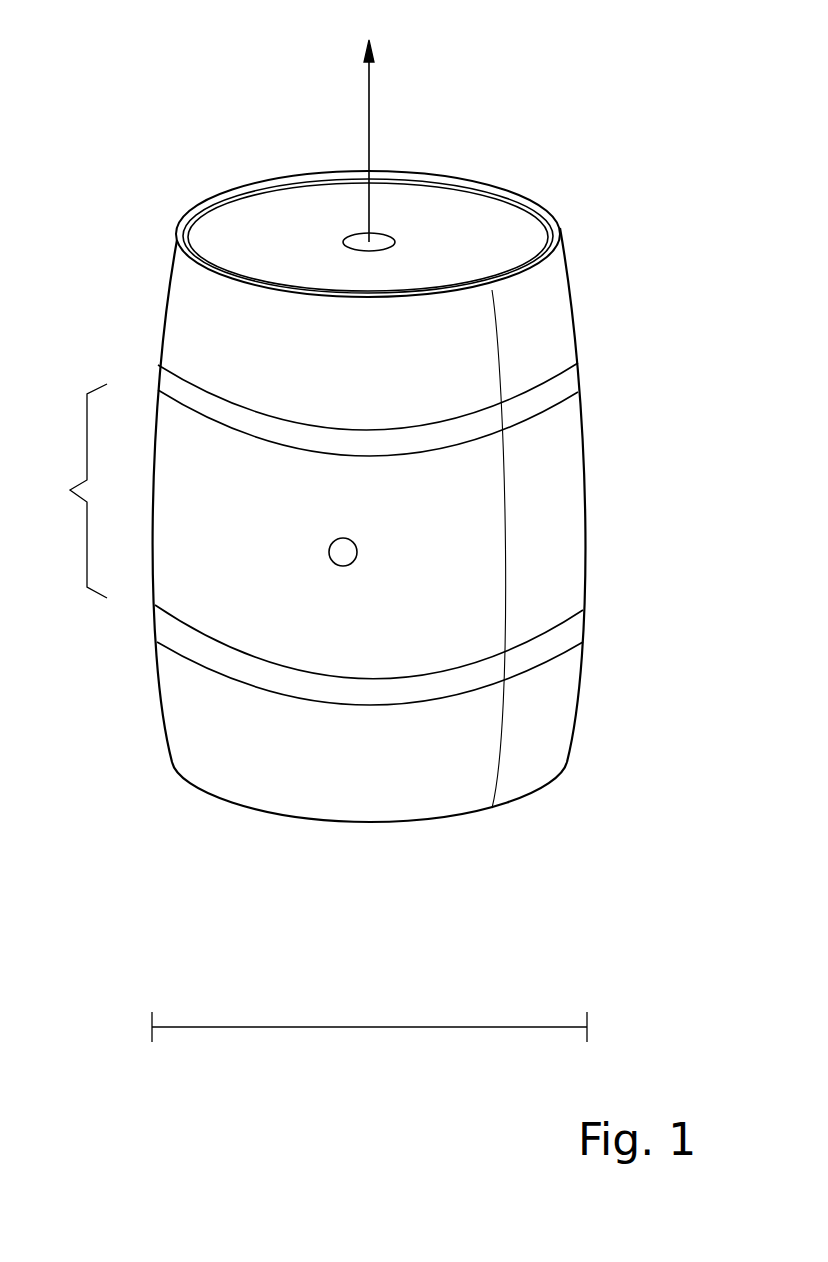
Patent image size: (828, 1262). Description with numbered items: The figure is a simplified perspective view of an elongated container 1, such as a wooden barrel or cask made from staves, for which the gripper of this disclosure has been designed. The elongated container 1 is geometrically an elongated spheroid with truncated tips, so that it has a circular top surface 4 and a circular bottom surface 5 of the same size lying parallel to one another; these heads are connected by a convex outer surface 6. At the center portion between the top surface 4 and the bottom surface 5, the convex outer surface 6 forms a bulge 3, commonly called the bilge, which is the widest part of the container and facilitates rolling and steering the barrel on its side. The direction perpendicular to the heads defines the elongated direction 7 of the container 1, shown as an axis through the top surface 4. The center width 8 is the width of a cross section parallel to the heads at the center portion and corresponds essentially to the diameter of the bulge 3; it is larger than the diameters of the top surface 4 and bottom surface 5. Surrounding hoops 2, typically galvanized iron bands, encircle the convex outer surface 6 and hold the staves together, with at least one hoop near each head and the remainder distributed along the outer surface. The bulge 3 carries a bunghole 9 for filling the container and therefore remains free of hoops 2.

The elongated container 1 is at (357, 574).
The hoops 2 is at (553, 403).
The bulge 3 is at (77, 491).
The circular top surface 4 is at (497, 227).
The circular bottom surface 5 is at (338, 821).
The convex outer surface 6 is at (556, 554).
The elongated direction 7 is at (367, 113).
The center width 8 is at (364, 1028).
The bunghole 9 is at (328, 552).